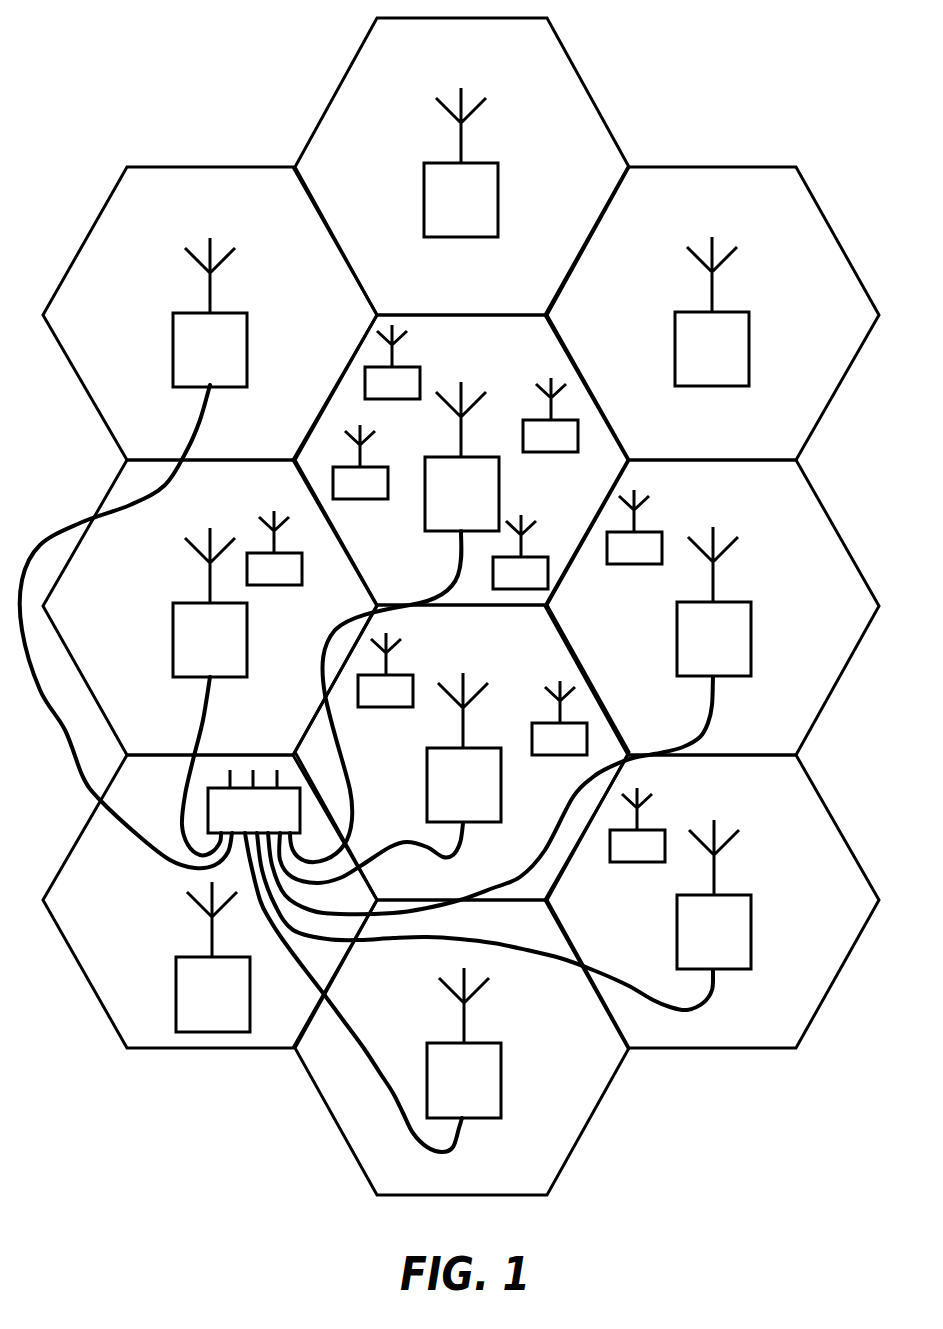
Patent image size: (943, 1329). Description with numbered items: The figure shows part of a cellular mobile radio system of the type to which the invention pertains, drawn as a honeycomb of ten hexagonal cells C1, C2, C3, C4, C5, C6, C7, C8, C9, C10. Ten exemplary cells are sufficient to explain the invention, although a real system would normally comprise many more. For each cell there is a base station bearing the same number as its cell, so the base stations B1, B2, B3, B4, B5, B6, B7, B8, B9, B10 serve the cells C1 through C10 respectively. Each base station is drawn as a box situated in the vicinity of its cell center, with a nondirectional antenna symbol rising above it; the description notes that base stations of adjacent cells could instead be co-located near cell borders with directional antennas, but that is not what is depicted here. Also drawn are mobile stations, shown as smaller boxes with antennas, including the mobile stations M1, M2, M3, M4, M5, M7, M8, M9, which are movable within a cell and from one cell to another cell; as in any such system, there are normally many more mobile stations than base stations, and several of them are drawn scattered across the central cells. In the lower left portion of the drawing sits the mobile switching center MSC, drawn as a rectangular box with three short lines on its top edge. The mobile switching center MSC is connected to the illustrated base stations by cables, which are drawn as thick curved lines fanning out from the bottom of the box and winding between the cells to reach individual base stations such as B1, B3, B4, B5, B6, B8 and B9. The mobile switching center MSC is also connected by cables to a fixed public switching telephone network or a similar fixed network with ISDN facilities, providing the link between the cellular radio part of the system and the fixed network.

The cell C1 is at (415, 590).
The cell C2 is at (667, 441).
The cell C3 is at (667, 733).
The cell C4 is at (417, 879).
The cell C5 is at (165, 738).
The cell C6 is at (165, 445).
The cell C7 is at (415, 298).
The cell C8 is at (667, 1030).
The cell C9 is at (418, 1176).
The cell C10 is at (156, 1005).
The base station B1 is at (394, 622).
The base station B2 is at (712, 311).
The base station B3 is at (509, 720).
The base station B4 is at (390, 778).
The base station B5 is at (210, 691).
The base station B6 is at (133, 553).
The base station B7 is at (461, 162).
The base station B8 is at (504, 915).
The base station B9 is at (373, 992).
The base station B10 is at (213, 957).
The mobile station M1 is at (637, 825).
The mobile station M2 is at (274, 548).
The mobile station M3 is at (360, 462).
The mobile station M4 is at (550, 415).
The mobile station M5 is at (634, 527).
The mobile station M7 is at (520, 552).
The mobile station M8 is at (476, 540).
The mobile station M9 is at (385, 670).
The mobile switching center MSC is at (254, 801).